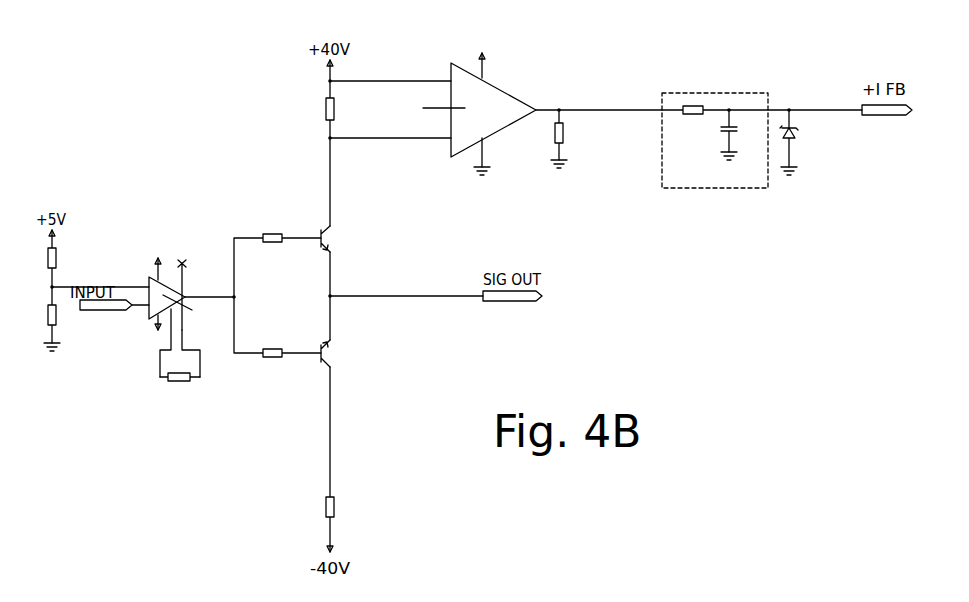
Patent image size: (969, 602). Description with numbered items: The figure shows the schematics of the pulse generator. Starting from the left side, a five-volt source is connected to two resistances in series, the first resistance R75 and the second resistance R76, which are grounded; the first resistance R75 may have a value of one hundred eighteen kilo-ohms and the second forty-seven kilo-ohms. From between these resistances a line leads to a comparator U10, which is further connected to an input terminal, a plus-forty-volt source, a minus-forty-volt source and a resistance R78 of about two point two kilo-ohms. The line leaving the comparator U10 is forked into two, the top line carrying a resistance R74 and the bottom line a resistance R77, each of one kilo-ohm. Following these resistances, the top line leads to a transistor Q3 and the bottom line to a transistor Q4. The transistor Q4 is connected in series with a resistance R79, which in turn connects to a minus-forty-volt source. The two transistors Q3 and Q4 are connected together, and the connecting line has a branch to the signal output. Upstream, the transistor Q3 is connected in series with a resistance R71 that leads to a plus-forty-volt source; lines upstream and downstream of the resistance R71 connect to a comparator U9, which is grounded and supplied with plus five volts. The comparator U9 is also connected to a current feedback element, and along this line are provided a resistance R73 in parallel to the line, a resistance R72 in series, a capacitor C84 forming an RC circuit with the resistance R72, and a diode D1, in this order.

The resistance R71 is at (315, 111).
The resistance R72 is at (691, 120).
The resistance R73 is at (574, 139).
The resistance R74 is at (273, 229).
The resistance R75 is at (69, 258).
The resistance R76 is at (36, 315).
The resistance R77 is at (266, 365).
The resistance R78 is at (192, 387).
The resistance R79 is at (345, 507).
The capacitor C84 is at (743, 135).
The diode D1 is at (803, 142).
The transistor Q3 is at (340, 239).
The transistor Q4 is at (340, 353).
The comparator U9 is at (448, 104).
The comparator U10 is at (177, 307).